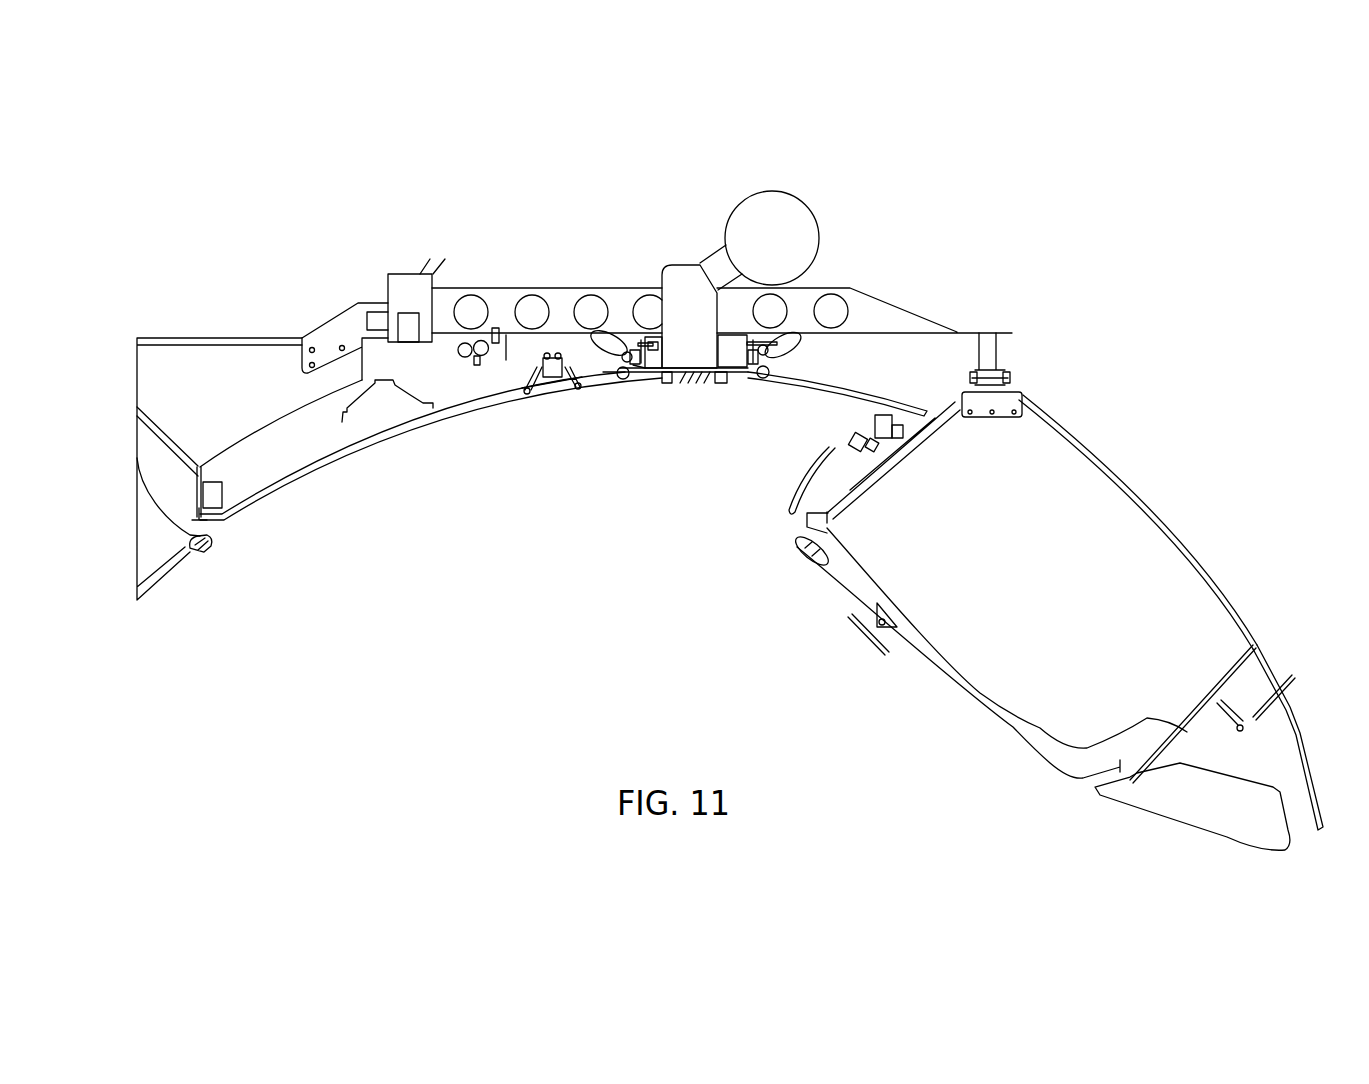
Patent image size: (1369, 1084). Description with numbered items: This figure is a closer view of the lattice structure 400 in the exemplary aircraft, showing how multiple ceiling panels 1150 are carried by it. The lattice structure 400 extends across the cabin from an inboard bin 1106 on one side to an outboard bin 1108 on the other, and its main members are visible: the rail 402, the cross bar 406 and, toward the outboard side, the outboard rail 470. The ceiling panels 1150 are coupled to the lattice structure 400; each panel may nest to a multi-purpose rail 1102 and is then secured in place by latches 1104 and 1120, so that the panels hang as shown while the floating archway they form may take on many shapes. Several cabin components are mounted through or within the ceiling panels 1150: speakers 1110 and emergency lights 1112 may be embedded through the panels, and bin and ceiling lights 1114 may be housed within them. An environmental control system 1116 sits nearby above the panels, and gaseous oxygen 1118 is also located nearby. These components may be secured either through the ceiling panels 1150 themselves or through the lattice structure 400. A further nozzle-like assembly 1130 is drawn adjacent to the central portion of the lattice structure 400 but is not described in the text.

The lattice structure 400 is at (551, 188).
The rail 402 is at (405, 285).
The cross bar 406 is at (613, 288).
The outboard rail 470 is at (993, 355).
The multi-purpose rail 1102 is at (206, 540).
The latch 1104 is at (618, 380).
The inboard bin 1106 is at (158, 550).
The outboard bin 1108 is at (1052, 445).
The speaker 1110 is at (387, 408).
The emergency light 1112 is at (548, 392).
The bin and ceiling light 1114 is at (857, 438).
The environmental control system 1116 is at (808, 231).
The gaseous oxygen 1118 is at (495, 328).
The latch 1120 is at (216, 497).
The nozzle assembly 1130 is at (781, 354).
The ceiling panel 1150 is at (773, 382).